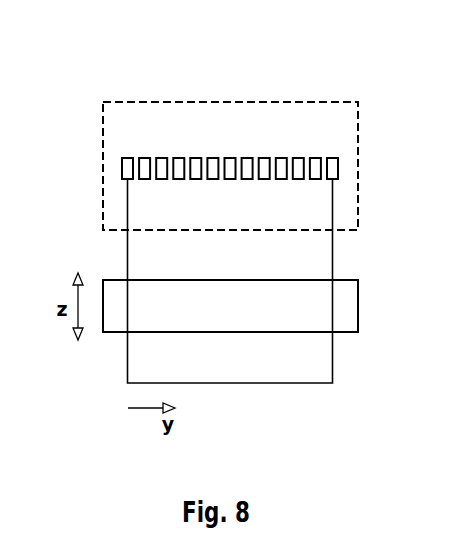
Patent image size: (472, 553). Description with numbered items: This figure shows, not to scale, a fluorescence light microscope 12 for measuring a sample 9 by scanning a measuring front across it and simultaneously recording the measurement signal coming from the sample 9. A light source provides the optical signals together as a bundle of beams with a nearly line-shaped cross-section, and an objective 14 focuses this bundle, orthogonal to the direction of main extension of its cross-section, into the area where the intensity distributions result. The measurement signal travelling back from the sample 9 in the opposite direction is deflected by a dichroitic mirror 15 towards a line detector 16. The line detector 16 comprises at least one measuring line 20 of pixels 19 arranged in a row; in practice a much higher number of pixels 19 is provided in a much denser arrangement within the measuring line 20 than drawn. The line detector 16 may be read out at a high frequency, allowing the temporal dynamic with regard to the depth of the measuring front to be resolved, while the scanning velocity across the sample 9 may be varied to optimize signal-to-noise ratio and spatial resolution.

The sample 9 is at (313, 384).
The fluorescence light microscope 12 is at (205, 128).
The objective 14 is at (380, 296).
The dichroitic mirror 15 is at (284, 101).
The line detector 16 is at (354, 157).
The pixels 19 is at (299, 157).
The measuring line 20 is at (97, 165).